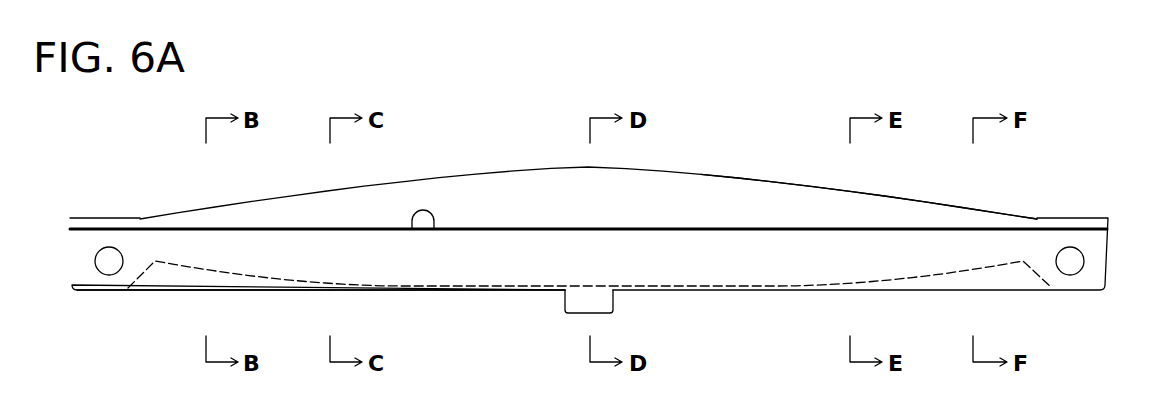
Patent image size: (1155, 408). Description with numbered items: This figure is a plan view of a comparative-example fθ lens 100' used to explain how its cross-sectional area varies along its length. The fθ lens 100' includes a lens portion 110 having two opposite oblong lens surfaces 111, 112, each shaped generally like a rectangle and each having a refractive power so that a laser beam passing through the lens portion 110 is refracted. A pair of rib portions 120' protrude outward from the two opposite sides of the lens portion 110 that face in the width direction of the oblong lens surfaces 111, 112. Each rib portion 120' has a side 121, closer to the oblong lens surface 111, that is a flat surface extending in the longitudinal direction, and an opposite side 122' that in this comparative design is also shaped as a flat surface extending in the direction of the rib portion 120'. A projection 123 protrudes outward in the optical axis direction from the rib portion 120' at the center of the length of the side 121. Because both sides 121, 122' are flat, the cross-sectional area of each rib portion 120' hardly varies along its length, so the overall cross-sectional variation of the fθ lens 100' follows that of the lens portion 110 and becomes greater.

The fθ lens 100' is at (588, 126).
The lens portion 110 is at (684, 163).
The oblong lens surface 111 is at (718, 287).
The oblong lens surface 112 is at (787, 182).
The rib portion 120' is at (589, 214).
The side 121 is at (285, 293).
The side 122' is at (440, 273).
The projection 123 is at (580, 305).